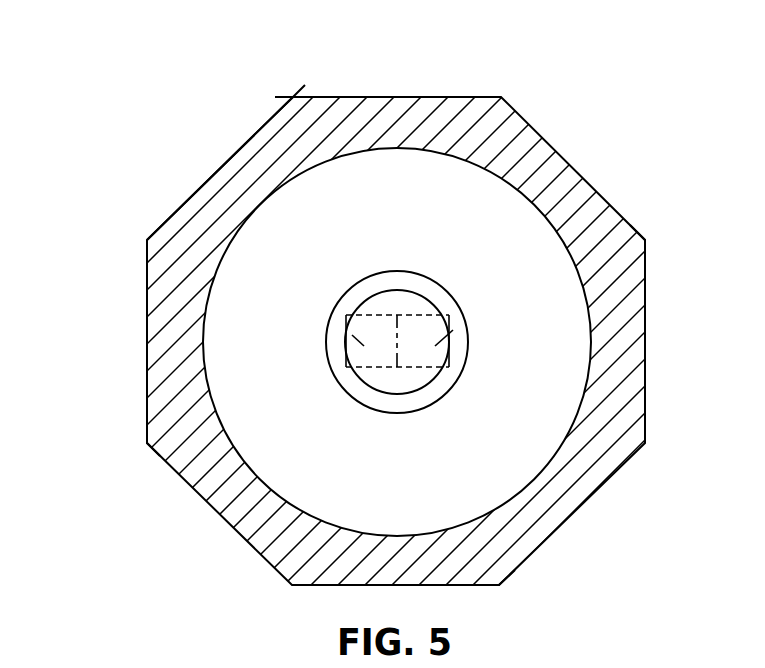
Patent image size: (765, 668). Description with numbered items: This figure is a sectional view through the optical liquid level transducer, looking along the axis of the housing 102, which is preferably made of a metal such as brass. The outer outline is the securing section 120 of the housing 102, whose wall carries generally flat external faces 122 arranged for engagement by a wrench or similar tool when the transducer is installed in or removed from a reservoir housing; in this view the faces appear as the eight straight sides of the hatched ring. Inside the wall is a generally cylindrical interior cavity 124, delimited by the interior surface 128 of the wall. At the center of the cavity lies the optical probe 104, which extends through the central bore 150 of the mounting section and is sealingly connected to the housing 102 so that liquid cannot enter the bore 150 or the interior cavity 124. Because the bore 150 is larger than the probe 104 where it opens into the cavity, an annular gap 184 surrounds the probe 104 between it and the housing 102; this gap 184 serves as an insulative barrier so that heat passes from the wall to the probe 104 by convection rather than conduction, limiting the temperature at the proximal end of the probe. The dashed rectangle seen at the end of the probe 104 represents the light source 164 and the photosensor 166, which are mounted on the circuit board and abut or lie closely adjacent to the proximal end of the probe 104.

The housing 102 is at (650, 343).
The securing section 120 is at (172, 206).
The external faces 122 is at (325, 95).
The interior cavity 124 is at (367, 186).
The interior surface 128 is at (545, 213).
The optical probe 104 is at (408, 284).
The annular gap 184 is at (370, 288).
The central bore 150 is at (430, 380).
The light source 164 is at (342, 323).
The photosensor 166 is at (455, 323).